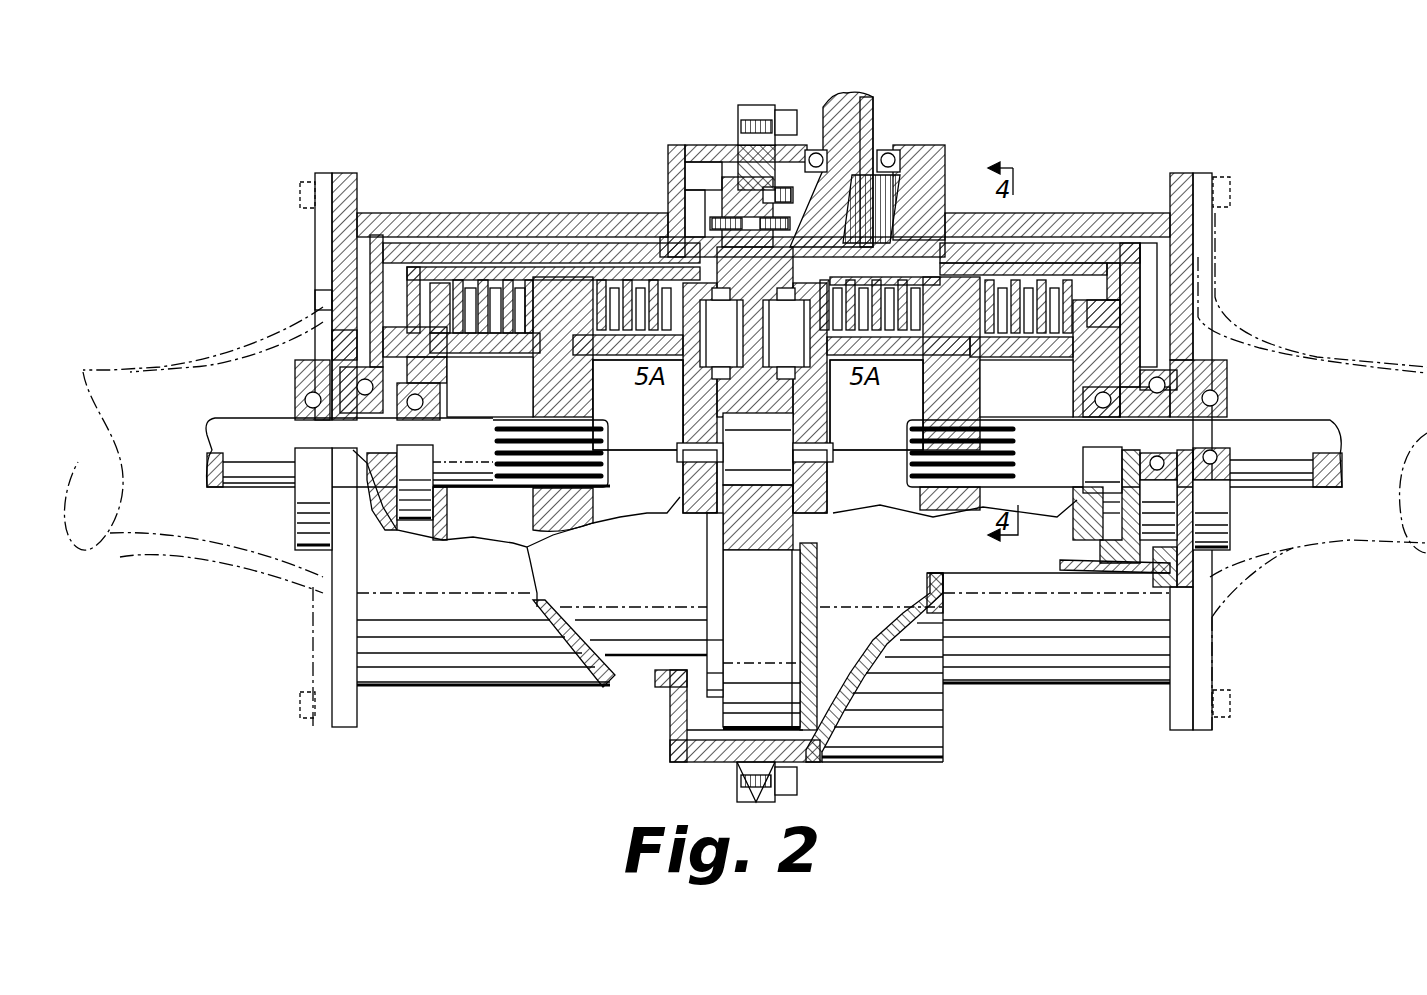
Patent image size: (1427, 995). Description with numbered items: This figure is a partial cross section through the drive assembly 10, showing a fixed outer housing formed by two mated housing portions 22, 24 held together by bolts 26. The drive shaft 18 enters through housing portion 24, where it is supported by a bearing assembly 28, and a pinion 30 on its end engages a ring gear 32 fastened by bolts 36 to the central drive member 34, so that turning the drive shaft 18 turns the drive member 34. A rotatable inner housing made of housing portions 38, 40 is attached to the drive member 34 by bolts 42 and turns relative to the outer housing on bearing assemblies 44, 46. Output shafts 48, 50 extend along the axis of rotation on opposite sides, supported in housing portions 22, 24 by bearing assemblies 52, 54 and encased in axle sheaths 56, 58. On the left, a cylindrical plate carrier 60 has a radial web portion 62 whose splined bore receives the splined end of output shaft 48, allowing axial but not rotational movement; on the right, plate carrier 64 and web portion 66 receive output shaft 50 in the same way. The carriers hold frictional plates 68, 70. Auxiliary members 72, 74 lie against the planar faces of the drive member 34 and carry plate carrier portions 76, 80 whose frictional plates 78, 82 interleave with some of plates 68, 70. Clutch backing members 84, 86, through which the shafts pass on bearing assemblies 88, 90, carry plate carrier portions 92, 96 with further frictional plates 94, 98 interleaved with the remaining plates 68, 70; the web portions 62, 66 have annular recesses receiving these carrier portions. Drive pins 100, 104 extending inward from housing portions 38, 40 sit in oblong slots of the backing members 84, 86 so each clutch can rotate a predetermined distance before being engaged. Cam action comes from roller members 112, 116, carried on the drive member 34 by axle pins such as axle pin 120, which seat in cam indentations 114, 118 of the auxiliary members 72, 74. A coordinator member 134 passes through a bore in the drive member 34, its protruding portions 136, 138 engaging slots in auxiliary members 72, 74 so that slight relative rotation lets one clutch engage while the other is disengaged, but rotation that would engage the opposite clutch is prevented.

The assembly 10 is at (612, 118).
The drive shaft 18 is at (873, 103).
The housing portion 22 is at (375, 213).
The housing portion 24 is at (1100, 217).
The bolts 26 is at (775, 106).
The bearing assembly 28 is at (893, 190).
The pinion 30 is at (945, 150).
The ring gear 32 is at (820, 680).
The central drive member 34 is at (707, 605).
The bolts 36 is at (787, 170).
The housing portion 38 is at (640, 650).
The housing portion 40 is at (1117, 243).
The bolts 42 is at (740, 180).
The bearing assembly 44 is at (353, 347).
The bearing assembly 46 is at (1230, 367).
The output shaft 48 is at (247, 490).
The output shaft 50 is at (1290, 487).
The bearing assembly 52 is at (293, 393).
The bearing assembly 54 is at (1230, 407).
The axle sheath 56 is at (130, 340).
The axle sheath 58 is at (1390, 350).
The plate carrier 60 is at (417, 267).
The web portion 62 is at (593, 513).
The plate carrier 64 is at (1140, 263).
The web portion 66 is at (903, 500).
The frictional plates 68 is at (598, 300).
The frictional plates 70 is at (915, 305).
The auxiliary member 72 is at (667, 513).
The auxiliary member 74 is at (840, 513).
The plate carrier portion 76 is at (597, 360).
The frictional plates 78 is at (605, 278).
The plate carrier portion 80 is at (923, 360).
The frictional plates 82 is at (913, 270).
The clutch backing member 84 is at (447, 507).
The clutch backing member 86 is at (1073, 533).
The bearing assembly 88 is at (417, 507).
The bearing assembly 90 is at (1097, 420).
The plate carrier portion 92 is at (523, 370).
The frictional plates 94 is at (470, 280).
The plate carrier portion 96 is at (1000, 373).
The frictional plates 98 is at (1040, 280).
The drive pin 100 is at (330, 293).
The drive pin 104 is at (1140, 337).
The roller member 112 is at (687, 350).
The cam indentation 114 is at (645, 270).
The roller member 116 is at (827, 350).
The cam indentation 118 is at (793, 257).
The axle pin 120 is at (733, 357).
The coordinator member 134 is at (737, 550).
The protruding portion 136 is at (670, 453).
The protruding portion 138 is at (837, 453).